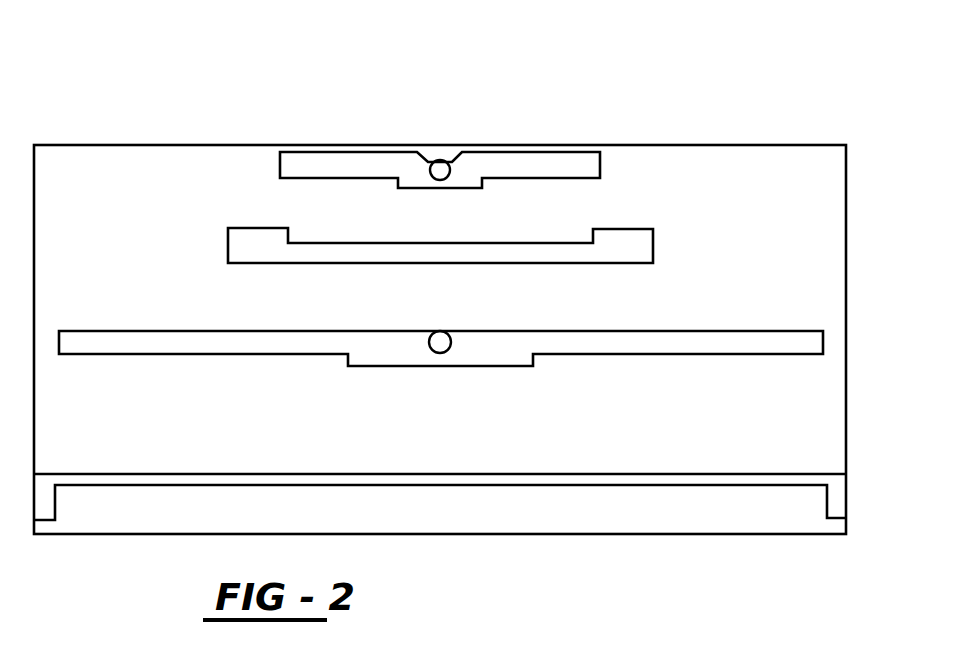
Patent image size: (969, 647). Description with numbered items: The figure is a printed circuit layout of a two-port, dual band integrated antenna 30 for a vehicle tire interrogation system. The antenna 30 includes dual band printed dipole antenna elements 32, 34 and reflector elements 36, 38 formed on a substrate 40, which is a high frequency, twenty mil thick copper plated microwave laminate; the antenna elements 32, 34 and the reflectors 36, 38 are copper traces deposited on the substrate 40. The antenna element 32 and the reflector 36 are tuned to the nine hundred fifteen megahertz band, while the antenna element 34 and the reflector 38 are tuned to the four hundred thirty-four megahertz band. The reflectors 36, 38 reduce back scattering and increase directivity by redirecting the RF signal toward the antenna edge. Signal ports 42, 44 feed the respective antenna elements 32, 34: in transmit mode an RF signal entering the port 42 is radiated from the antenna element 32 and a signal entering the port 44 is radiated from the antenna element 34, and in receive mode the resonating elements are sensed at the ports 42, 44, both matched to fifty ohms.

The integrated antenna 30 is at (297, 80).
The dipole antenna element 32 is at (563, 150).
The dipole antenna element 34 is at (713, 328).
The reflector element 36 is at (624, 228).
The reflector element 38 is at (708, 472).
The substrate 40 is at (810, 193).
The signal port 42 is at (438, 168).
The signal port 44 is at (441, 340).